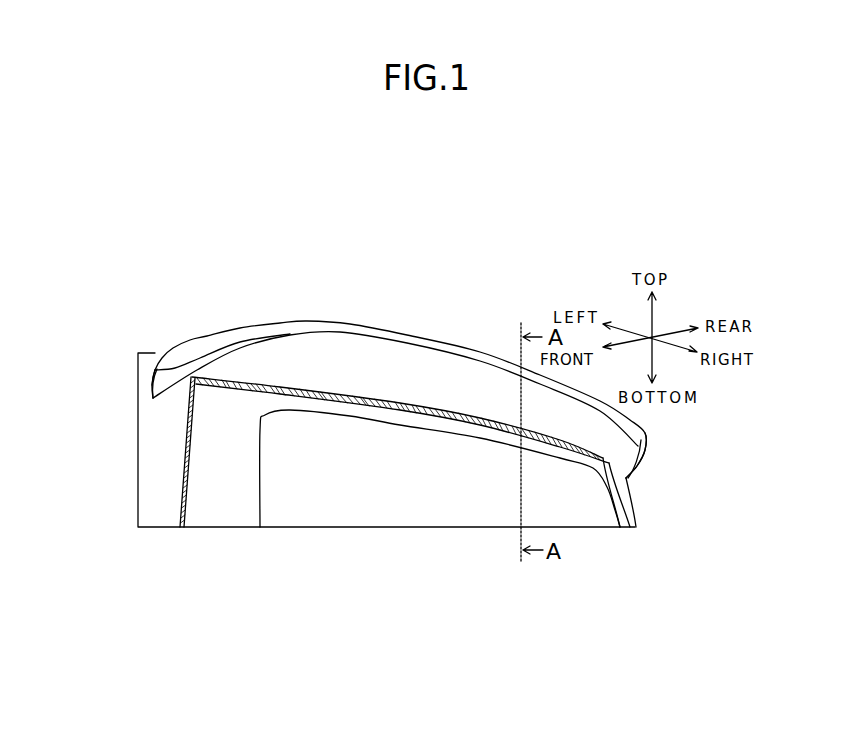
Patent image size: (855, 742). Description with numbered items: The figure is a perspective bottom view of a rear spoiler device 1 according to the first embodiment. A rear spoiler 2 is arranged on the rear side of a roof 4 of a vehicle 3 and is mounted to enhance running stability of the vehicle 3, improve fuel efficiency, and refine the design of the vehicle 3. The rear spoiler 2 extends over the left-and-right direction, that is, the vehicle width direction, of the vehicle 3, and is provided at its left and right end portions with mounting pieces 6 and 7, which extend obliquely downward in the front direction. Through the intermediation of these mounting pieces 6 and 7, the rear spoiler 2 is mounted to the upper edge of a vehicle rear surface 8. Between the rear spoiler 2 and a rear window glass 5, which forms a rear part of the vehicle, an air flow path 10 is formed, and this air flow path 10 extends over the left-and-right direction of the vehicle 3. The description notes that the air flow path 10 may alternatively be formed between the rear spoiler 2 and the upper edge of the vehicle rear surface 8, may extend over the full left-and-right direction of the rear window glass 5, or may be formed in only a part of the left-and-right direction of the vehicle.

The rear spoiler device 1 is at (408, 443).
The rear spoiler 2 is at (425, 352).
The vehicle 3 is at (163, 332).
The roof 4 is at (152, 353).
The rear window glass 5 is at (378, 490).
The mounting piece 6 is at (157, 368).
The mounting piece 7 is at (630, 475).
The vehicle rear surface 8 is at (208, 472).
The air flow path 10 is at (480, 427).